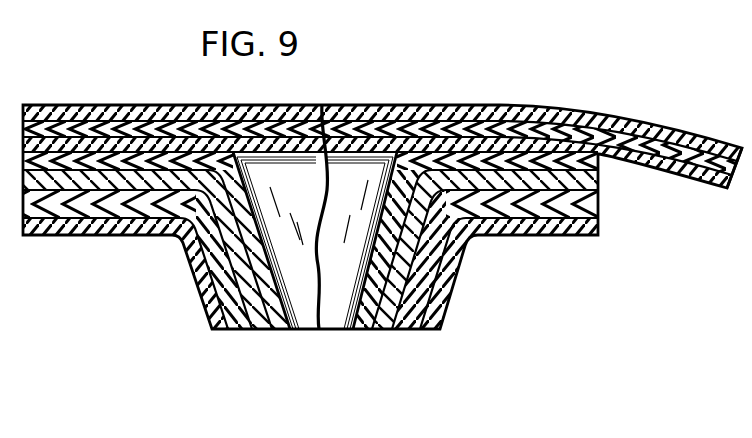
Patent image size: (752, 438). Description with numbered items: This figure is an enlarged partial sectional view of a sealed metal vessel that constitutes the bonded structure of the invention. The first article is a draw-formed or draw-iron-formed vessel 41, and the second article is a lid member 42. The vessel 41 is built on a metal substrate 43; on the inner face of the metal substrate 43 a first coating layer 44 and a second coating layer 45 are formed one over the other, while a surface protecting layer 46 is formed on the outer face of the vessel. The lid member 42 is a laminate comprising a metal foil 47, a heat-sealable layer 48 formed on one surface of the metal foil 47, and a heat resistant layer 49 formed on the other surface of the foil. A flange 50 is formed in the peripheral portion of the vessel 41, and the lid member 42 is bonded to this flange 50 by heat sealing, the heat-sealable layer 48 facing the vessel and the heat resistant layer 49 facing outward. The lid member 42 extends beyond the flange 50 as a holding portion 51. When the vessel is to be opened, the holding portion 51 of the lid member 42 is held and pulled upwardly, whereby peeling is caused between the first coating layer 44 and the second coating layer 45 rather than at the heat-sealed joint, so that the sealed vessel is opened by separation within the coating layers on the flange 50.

The vessel 41 is at (192, 292).
The lid member 42 is at (535, 104).
The metal substrate 43 is at (407, 331).
The first coating layer 44 is at (385, 331).
The second coating layer 45 is at (367, 331).
The surface protecting layer 46 is at (446, 305).
The metal foil 47 is at (655, 128).
The heat-sealable layer 48 is at (650, 160).
The heat resistant layer 49 is at (460, 105).
The flange 50 is at (108, 237).
The holding portion 51 is at (703, 185).